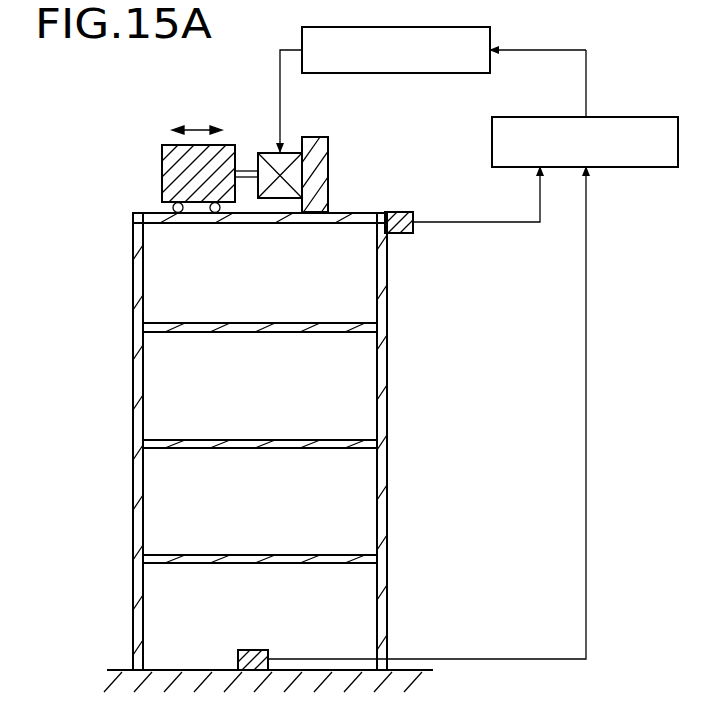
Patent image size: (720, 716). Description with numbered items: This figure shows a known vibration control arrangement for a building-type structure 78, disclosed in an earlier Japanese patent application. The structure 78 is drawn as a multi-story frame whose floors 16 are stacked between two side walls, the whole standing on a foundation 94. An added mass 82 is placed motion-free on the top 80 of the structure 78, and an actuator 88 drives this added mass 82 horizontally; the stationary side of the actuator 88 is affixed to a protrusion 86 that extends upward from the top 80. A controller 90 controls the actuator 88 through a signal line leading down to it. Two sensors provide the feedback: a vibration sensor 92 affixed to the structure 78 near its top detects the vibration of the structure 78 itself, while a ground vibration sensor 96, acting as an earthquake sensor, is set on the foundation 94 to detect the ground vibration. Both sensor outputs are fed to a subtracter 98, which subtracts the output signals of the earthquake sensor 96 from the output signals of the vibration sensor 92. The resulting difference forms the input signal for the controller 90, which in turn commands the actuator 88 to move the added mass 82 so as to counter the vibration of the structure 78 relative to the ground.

The shelf plate 16 is at (247, 332).
The structure 78 is at (133, 413).
The top of the structure 80 is at (247, 223).
The added mass 82 is at (172, 145).
The protrusion 86 is at (328, 143).
The actuator 88 is at (270, 153).
The controller 90 is at (472, 27).
The vibration sensor 92 is at (405, 235).
The foundation 94 is at (182, 686).
The ground vibration sensor 96 is at (240, 652).
The subtracter 98 is at (615, 117).